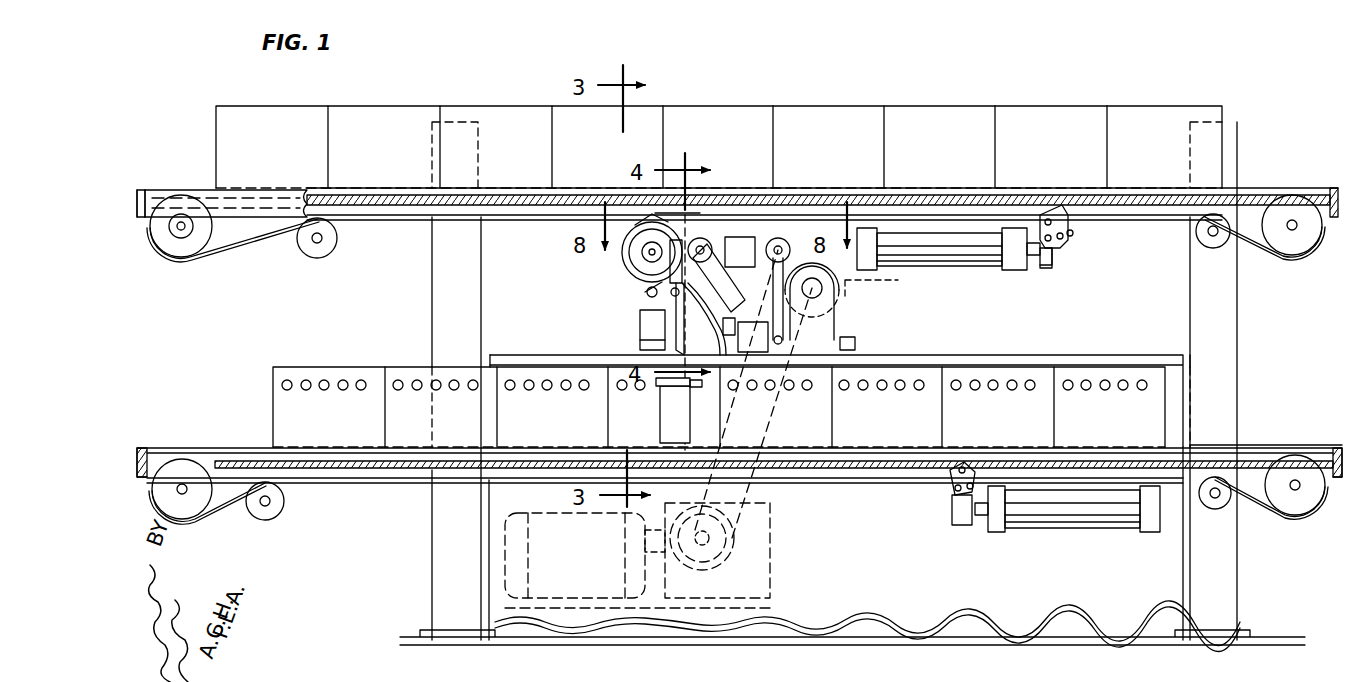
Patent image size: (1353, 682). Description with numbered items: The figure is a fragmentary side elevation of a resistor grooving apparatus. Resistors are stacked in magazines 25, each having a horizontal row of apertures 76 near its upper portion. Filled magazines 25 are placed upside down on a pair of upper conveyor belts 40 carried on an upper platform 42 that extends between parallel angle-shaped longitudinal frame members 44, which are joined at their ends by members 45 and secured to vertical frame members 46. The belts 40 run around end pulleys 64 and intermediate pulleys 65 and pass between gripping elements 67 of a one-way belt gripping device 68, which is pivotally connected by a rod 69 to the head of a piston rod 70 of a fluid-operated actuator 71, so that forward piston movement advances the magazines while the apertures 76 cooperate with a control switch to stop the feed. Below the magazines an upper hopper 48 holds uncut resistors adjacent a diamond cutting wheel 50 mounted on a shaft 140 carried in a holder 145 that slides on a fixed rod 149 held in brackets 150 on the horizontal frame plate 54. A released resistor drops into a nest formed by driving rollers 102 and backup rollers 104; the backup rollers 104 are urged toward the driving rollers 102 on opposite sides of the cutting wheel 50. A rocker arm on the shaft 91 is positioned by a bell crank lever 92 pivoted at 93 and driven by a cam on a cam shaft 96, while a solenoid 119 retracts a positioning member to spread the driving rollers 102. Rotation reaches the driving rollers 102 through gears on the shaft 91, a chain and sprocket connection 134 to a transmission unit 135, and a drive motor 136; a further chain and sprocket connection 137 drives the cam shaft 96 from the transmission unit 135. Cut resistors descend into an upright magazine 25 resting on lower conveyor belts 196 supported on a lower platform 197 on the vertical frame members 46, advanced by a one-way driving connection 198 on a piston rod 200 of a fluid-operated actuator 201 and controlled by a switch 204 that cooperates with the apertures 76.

The magazine 25 is at (572, 120).
The conveyor belts 40 is at (515, 212).
The upper platform 42 is at (1150, 195).
The longitudinal frame members 44 is at (205, 190).
The members 45 is at (143, 190).
The vertical frame members 46 is at (457, 508).
The upper hopper 48 is at (630, 235).
The diamond cutting wheel 50 is at (640, 254).
The horizontal frame plate 54 is at (925, 380).
The end pulleys 64 is at (170, 242).
The intermediate pulleys 65 is at (310, 242).
The gripping elements 67 is at (1058, 212).
The one-way belt gripping device 68 is at (1074, 238).
The rod 69 is at (1052, 248).
The piston rod 70 is at (1045, 265).
The fluid-operated actuator 71 is at (978, 248).
The apertures 76 is at (399, 380).
The shaft 91 is at (778, 238).
The bell crank lever 92 is at (745, 314).
The pivot 93 is at (787, 223).
The cam shaft 96 is at (820, 288).
The driving rollers 102 is at (706, 240).
The backup rollers 104 is at (655, 212).
The solenoid 119 is at (750, 236).
The chain and sprocket connection 134 is at (712, 212).
The transmission unit 135 is at (778, 557).
The drive motor 136 is at (552, 513).
The chain and sprocket connection 137 is at (770, 498).
The shaft 140 is at (637, 270).
The holder 145 is at (646, 292).
The fixed rod 149 is at (672, 300).
The brackets 150 is at (648, 330).
The conveyor belts 196 is at (862, 485).
The lower platform 197 is at (1252, 450).
The one-way driving connection 198 is at (948, 493).
The piston rod 200 is at (970, 522).
The fluid-operated actuator 201 is at (1076, 505).
The switch 204 is at (660, 388).